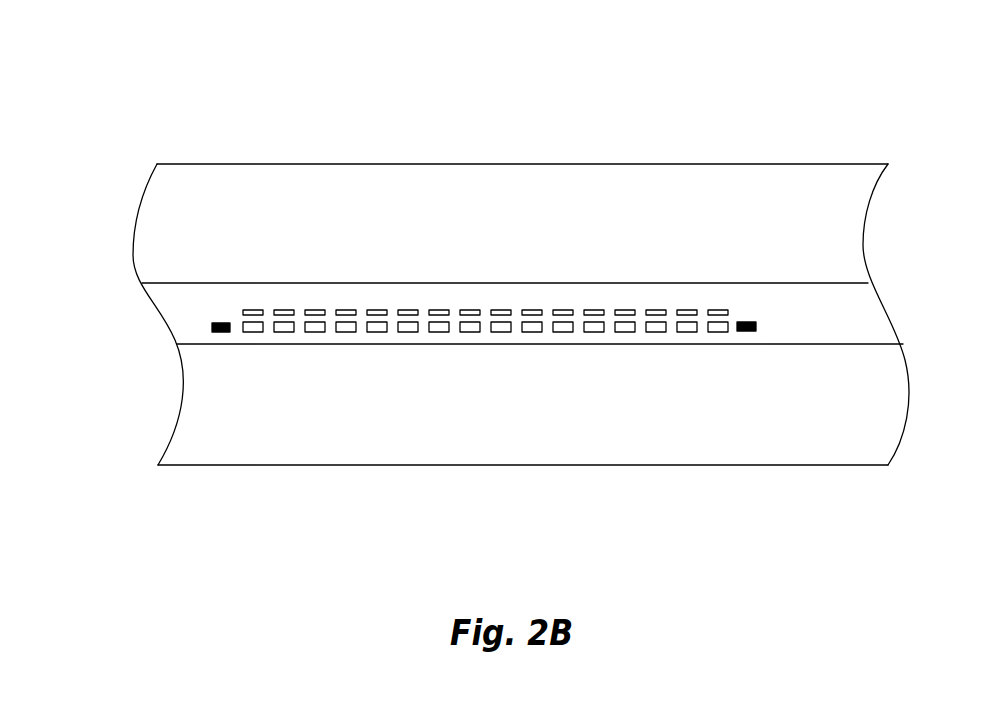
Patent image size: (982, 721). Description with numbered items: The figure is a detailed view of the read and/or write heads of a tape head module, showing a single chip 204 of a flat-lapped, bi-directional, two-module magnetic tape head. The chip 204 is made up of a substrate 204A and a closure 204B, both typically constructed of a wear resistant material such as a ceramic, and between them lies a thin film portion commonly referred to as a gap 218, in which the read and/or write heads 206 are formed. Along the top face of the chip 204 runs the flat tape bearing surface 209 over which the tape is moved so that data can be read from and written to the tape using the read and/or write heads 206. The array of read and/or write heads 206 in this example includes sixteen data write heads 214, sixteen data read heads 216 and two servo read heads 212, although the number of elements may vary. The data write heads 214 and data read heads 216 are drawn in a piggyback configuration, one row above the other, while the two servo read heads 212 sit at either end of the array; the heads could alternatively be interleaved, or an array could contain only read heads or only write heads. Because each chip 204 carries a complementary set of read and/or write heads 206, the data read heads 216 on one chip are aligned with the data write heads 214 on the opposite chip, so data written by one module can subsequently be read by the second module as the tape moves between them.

The chip 204 is at (172, 122).
The substrate 204A is at (282, 164).
The closure 204B is at (343, 466).
The tape bearing surface 209 is at (435, 243).
The read and/or write heads 206 is at (786, 309).
The servo read heads 212 is at (212, 327).
The data write heads 214 is at (623, 310).
The data read heads 216 is at (624, 332).
The gap 218 is at (888, 312).